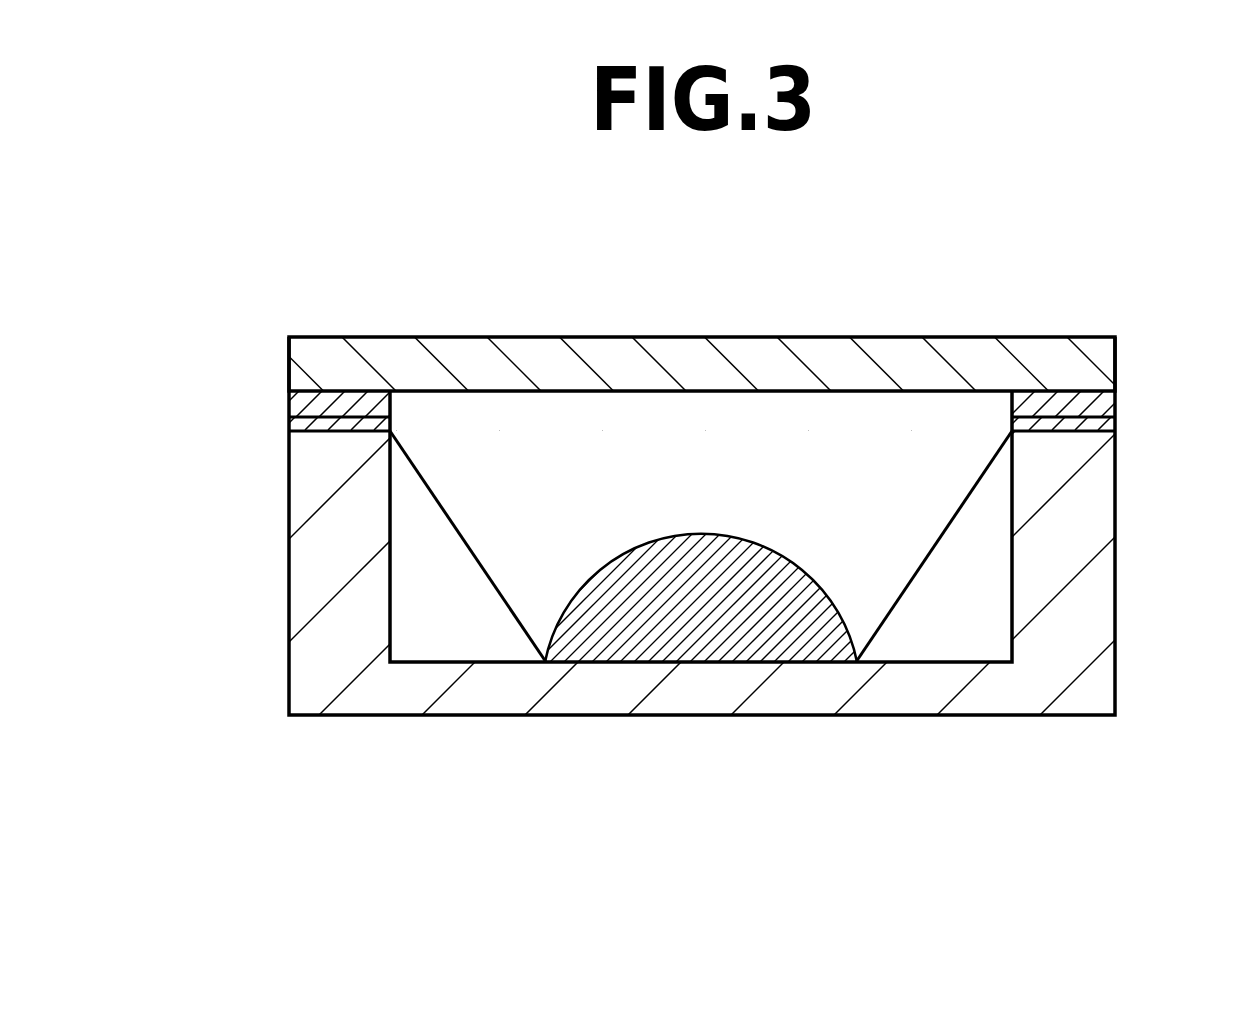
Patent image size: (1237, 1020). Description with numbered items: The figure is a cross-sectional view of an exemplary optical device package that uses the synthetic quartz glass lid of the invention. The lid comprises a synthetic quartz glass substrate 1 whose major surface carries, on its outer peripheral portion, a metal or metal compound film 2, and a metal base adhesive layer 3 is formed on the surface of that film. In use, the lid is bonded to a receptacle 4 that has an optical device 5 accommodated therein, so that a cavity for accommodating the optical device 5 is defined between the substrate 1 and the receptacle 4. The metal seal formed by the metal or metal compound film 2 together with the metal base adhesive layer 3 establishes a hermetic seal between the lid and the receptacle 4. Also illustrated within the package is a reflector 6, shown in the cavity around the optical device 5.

The synthetic quartz glass substrate 1 is at (1072, 368).
The metal or metal compound film 2 is at (300, 408).
The metal base adhesive layer 3 is at (300, 424).
The receptacle 4 is at (1092, 603).
The optical device 5 is at (725, 640).
The reflector 6 is at (473, 553).